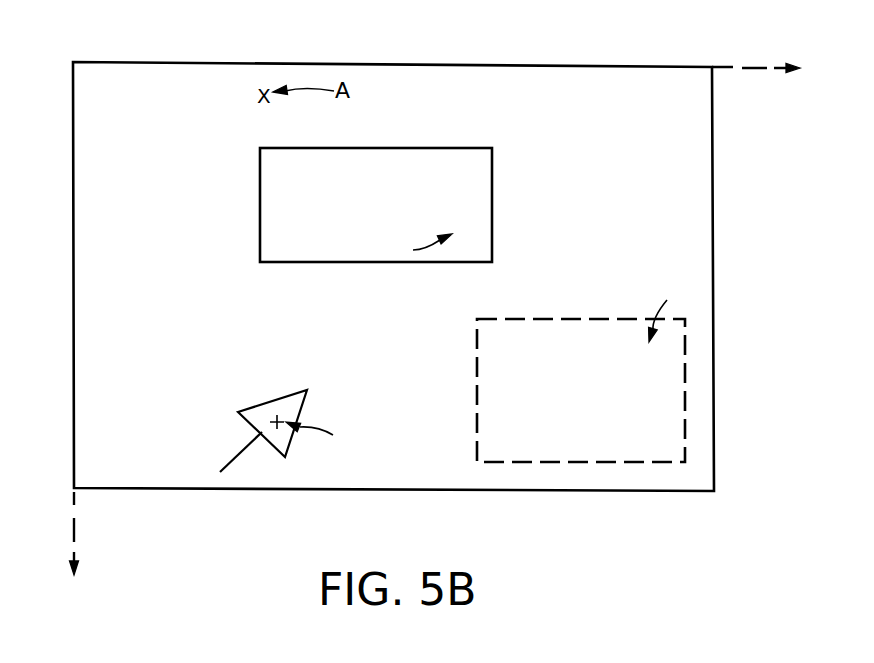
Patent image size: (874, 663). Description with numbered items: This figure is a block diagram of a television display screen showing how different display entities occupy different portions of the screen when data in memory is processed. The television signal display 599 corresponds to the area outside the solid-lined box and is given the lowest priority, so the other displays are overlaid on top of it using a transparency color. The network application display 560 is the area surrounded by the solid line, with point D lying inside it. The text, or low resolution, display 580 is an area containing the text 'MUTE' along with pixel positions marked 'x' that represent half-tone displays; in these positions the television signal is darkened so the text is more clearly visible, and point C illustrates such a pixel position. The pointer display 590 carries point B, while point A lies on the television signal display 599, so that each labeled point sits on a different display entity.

The television signal display 599 is at (179, 172).
The network application display 560 is at (468, 142).
The text (low resolution) display 580 is at (512, 306).
The pointer display 590 is at (315, 378).